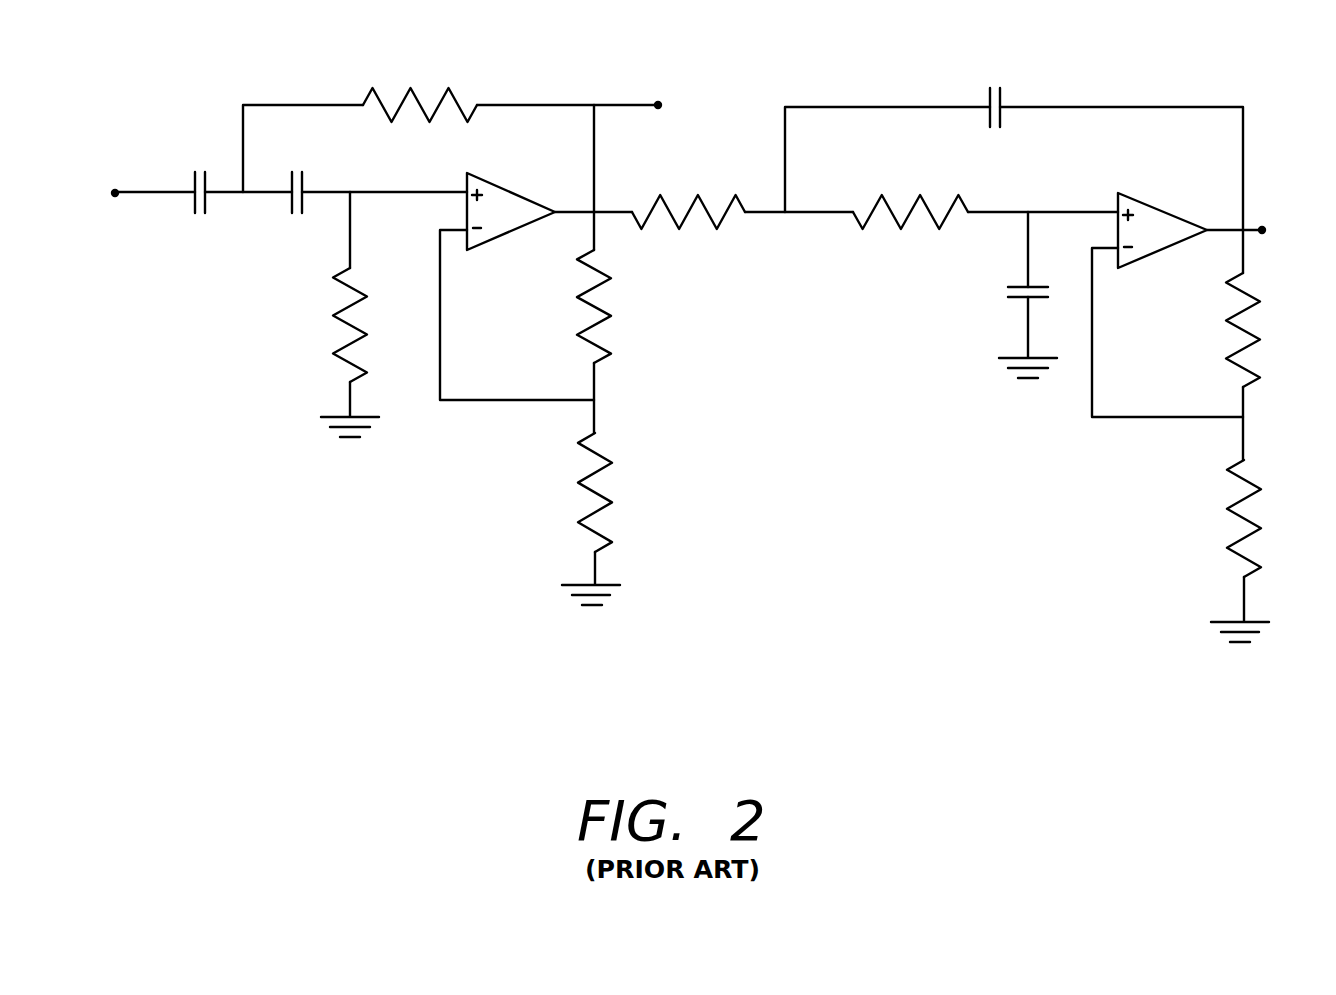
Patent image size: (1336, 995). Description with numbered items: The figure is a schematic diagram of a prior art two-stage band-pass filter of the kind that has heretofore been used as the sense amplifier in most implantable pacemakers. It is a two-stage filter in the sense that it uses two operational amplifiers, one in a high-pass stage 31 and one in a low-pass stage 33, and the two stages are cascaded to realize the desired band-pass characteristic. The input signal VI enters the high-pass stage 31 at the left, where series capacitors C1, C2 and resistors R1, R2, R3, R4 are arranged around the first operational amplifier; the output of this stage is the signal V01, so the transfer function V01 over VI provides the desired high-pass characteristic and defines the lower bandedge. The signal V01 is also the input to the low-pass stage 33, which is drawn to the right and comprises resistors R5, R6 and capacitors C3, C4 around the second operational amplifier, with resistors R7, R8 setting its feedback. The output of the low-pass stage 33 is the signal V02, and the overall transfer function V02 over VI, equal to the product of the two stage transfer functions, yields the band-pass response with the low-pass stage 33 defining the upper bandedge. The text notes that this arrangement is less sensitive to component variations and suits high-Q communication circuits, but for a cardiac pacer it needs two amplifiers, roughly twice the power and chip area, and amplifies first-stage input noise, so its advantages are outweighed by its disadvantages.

The high-pass stage 31 is at (398, 400).
The low-pass stage 33 is at (956, 400).
The resistor R1 is at (420, 85).
The resistor R2 is at (313, 325).
The resistor R3 is at (618, 306).
The resistor R4 is at (618, 492).
The resistor R5 is at (688, 189).
The resistor R6 is at (910, 189).
The resistor R7 is at (1267, 330).
The resistor R8 is at (1269, 518).
The capacitor C1 is at (198, 172).
The capacitor C2 is at (292, 172).
The capacitor C3 is at (1007, 291).
The capacitor C4 is at (1000, 88).
The input signal VI is at (136, 194).
The output signal of the high-pass stage V01 is at (686, 110).
The output signal of the low-pass stage V02 is at (1289, 235).